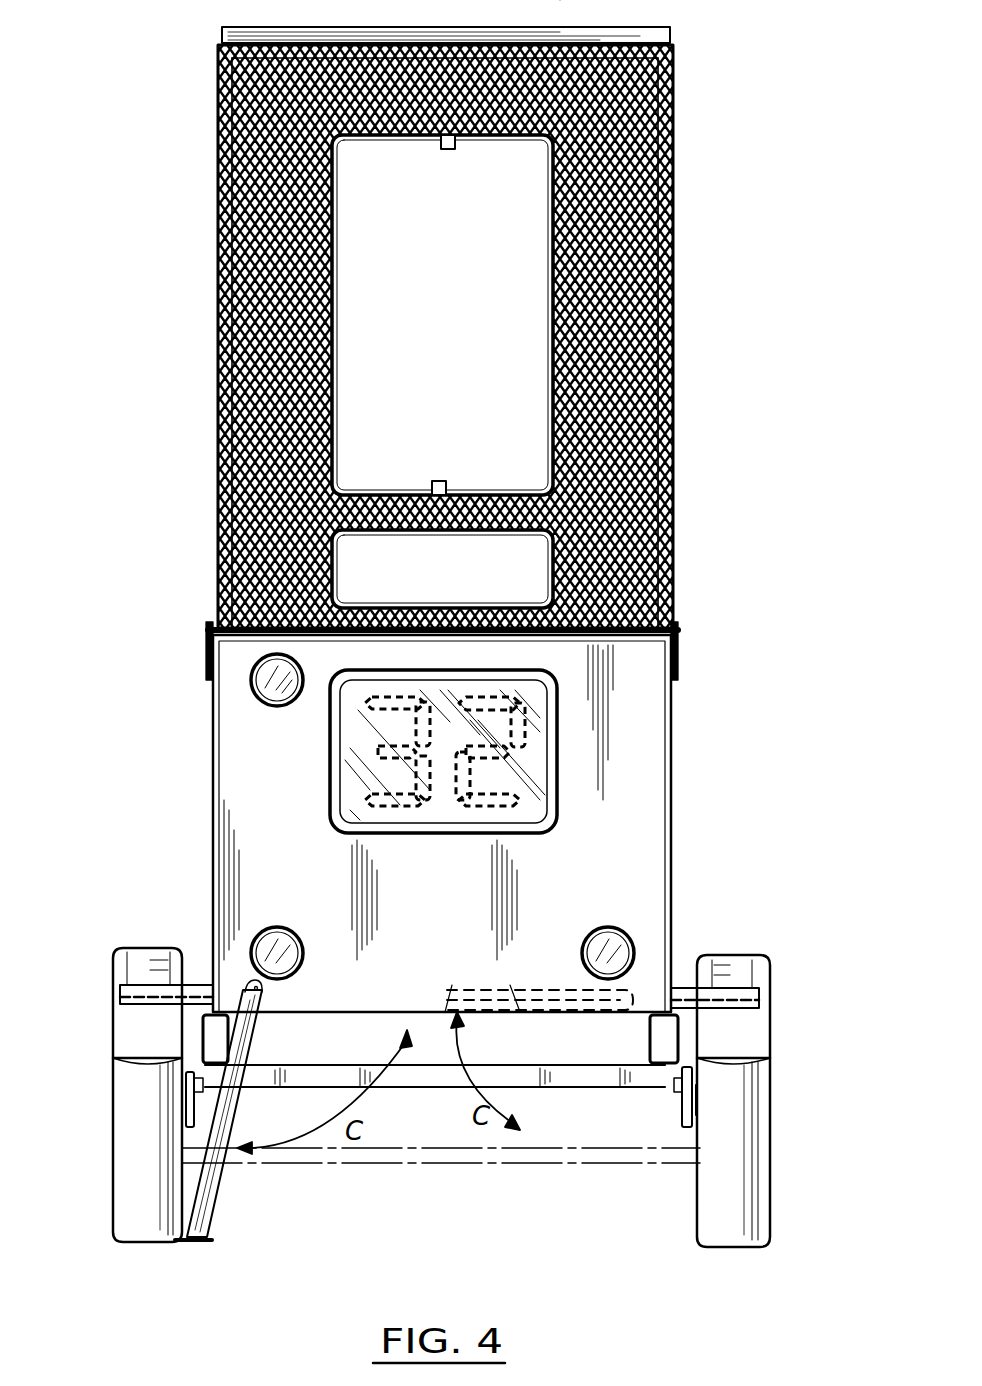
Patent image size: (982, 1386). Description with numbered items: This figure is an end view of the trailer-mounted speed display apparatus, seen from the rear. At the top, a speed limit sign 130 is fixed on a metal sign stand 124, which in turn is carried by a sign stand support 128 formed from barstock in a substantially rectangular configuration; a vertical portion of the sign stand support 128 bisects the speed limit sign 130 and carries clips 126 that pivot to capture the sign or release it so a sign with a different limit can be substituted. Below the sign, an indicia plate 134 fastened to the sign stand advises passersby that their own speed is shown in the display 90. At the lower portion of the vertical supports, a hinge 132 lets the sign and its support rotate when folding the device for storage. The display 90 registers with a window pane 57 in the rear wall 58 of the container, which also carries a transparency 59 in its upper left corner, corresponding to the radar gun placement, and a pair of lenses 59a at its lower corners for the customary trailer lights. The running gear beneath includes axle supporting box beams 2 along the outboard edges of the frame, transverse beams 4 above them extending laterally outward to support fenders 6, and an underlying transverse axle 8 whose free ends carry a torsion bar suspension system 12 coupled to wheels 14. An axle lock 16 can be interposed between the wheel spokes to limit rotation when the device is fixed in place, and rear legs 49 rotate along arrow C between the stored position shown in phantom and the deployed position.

The axle supporting box beams 2 is at (230, 1037).
The transverse beams 4 is at (188, 985).
The fenders 6 is at (130, 1029).
The axle 8 is at (446, 1088).
The torsion bar suspension system 12 is at (196, 1093).
The wheels 14 is at (130, 1176).
The axle lock 16 is at (458, 1158).
The rear legs 49 is at (207, 1203).
The window pane 57 is at (347, 728).
The rear wall 58 is at (616, 881).
The transparency 59 is at (253, 683).
The lenses 59a is at (268, 932).
The display 90 is at (546, 771).
The metal sign stand 124 is at (270, 318).
The clips 126 is at (456, 142).
The sign stand support 128 is at (450, 137).
The speed limit sign 130 is at (538, 368).
The hinge 132 is at (208, 651).
The indicia plate 134 is at (545, 600).